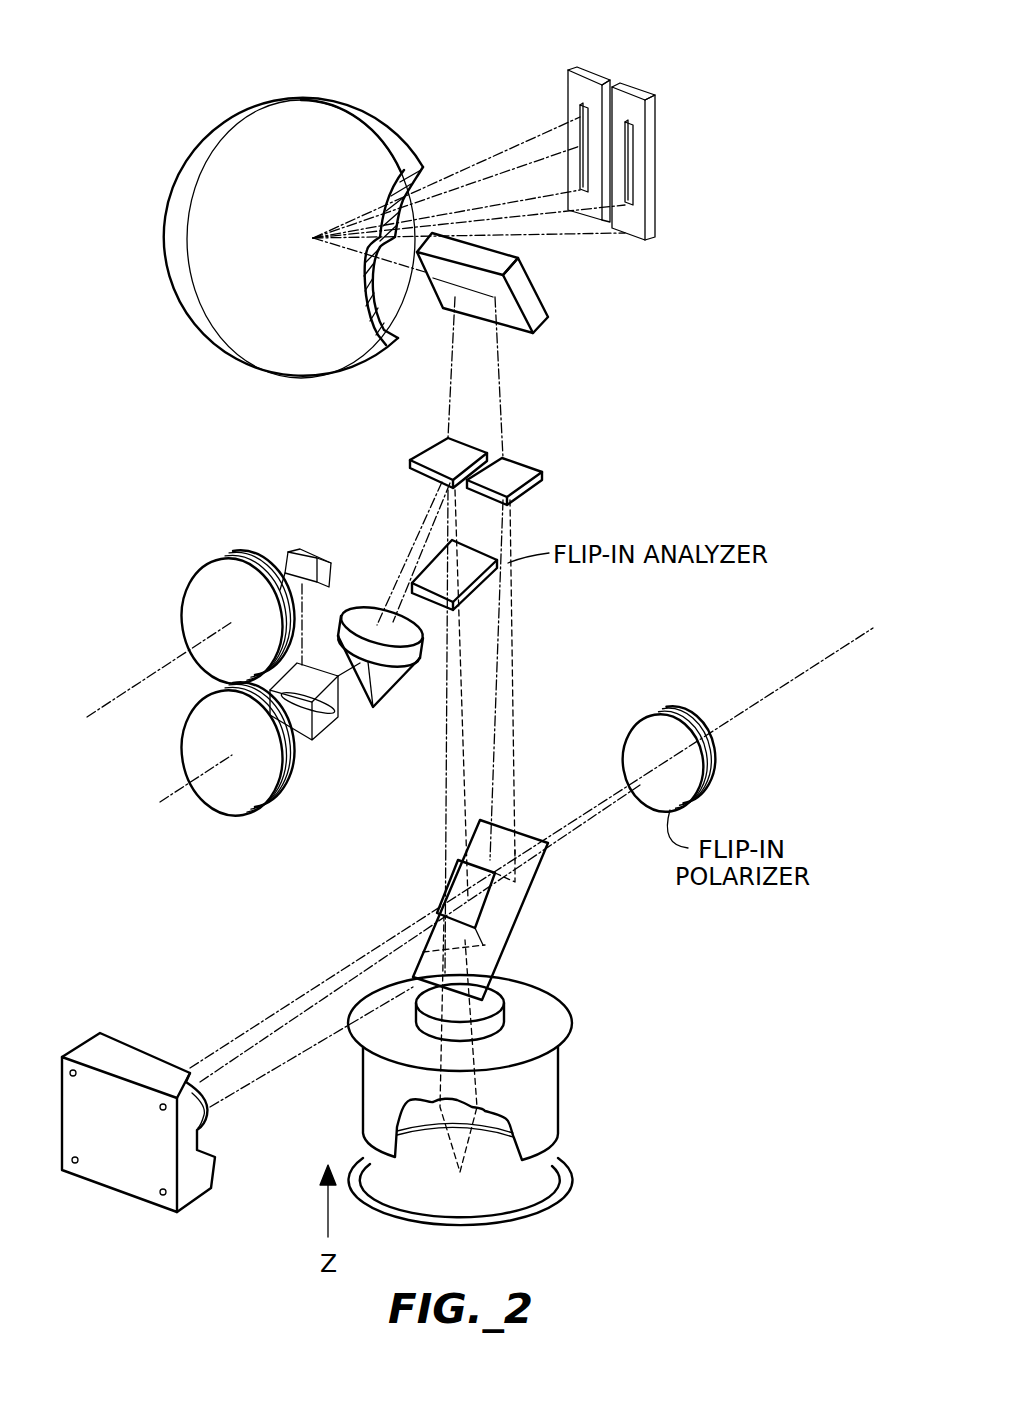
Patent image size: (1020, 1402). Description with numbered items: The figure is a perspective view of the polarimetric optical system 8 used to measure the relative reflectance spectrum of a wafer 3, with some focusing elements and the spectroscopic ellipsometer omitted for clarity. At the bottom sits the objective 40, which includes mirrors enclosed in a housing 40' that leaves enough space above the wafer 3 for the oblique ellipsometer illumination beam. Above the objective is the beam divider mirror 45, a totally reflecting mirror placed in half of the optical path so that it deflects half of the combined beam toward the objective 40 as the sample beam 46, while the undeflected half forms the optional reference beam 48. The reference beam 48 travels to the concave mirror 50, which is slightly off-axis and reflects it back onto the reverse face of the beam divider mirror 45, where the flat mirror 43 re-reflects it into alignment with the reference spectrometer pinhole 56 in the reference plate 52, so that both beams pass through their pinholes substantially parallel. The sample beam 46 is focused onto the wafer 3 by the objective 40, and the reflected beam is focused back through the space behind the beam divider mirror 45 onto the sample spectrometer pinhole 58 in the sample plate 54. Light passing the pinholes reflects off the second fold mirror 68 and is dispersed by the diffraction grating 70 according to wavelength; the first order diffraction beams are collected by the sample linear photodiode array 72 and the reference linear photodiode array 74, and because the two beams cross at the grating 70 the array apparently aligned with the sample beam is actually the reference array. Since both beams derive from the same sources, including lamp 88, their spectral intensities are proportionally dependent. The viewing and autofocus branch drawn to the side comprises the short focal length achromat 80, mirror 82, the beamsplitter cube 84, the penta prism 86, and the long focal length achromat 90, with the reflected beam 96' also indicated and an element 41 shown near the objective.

The optical system 8 is at (130, 38).
The diffraction grating 70 is at (256, 104).
The reference linear photodiode array 74 is at (586, 66).
The sample linear photodiode array 72 is at (646, 88).
The second fold mirror 68 is at (541, 296).
The sample spectrometer pinhole 58 is at (436, 447).
The reference spectrometer pinhole 56 is at (520, 468).
The sample plate 54 is at (407, 461).
The reference plate 52 is at (533, 486).
The sample beam 46 is at (457, 626).
The reference beam 48 is at (510, 652).
The achromat with long focal length 90 is at (228, 557).
The penta prism 86 is at (315, 552).
The achromat with short focal length 80 is at (347, 603).
The mirror 82 is at (393, 686).
The beamsplitter cube 84 is at (322, 734).
The lamp 88 is at (285, 790).
The reflected beam 96' is at (408, 799).
The flat mirror 43 is at (460, 898).
The beam divider mirror 45 is at (537, 884).
The aperture tube 41 is at (503, 1000).
The housing 40' is at (505, 1023).
The objective 40 is at (512, 1103).
The concave mirror 50 is at (193, 1198).
The wafer 3 is at (475, 1197).